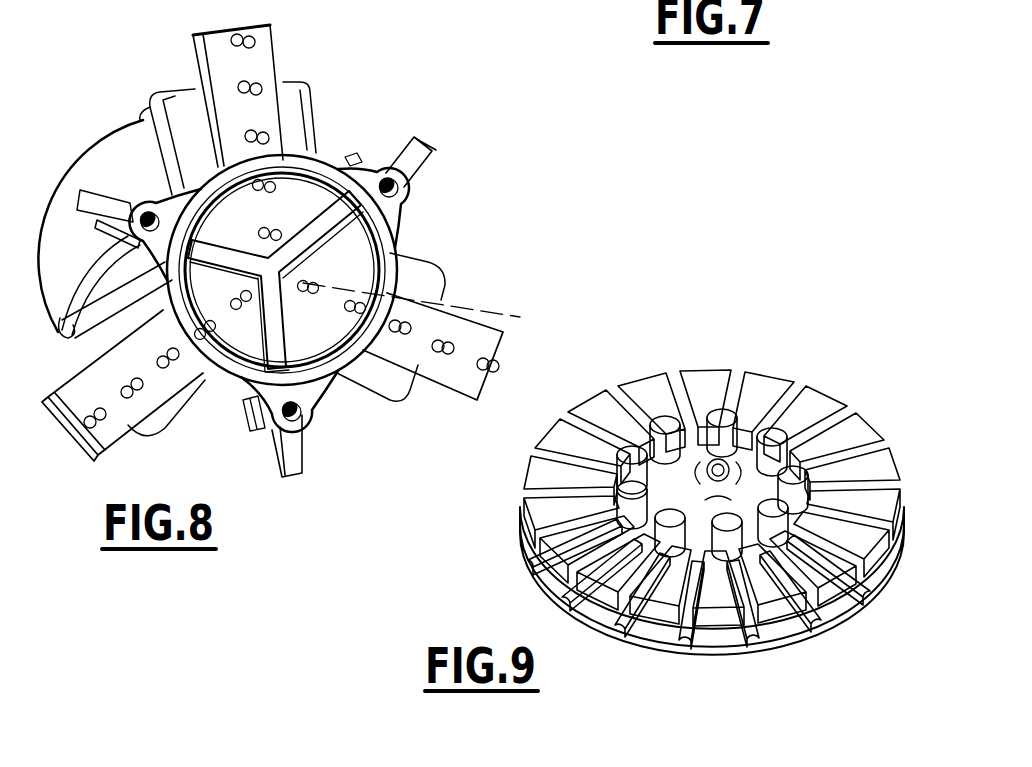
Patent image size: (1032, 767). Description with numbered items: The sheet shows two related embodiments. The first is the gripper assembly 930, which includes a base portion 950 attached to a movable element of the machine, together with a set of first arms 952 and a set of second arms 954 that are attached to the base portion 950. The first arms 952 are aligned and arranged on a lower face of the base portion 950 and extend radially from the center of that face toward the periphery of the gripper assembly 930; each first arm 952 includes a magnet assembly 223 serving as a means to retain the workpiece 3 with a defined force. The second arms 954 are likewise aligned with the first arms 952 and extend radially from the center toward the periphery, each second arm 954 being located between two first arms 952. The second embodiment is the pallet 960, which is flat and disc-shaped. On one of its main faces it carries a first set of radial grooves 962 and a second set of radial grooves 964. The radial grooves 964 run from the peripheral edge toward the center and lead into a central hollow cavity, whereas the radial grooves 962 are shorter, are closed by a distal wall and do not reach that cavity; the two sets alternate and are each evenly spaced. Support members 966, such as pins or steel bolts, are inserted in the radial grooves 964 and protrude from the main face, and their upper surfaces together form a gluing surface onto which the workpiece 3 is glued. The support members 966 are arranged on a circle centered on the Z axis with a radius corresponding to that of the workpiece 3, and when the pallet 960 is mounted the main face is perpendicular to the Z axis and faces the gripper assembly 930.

In FIG. 8, the gripper assembly 930 is at (450, 129).
In FIG. 8, the base portion 950 is at (88, 170).
In FIG. 8, the magnet assembly 223 is at (150, 213).
In FIG. 8, the second arm 954 is at (255, 62).
In FIG. 8, the first arm 952 is at (412, 158).
In FIG. 8, the workpiece 3 is at (307, 385).
In FIG. 8, the Z axis Z is at (422, 309).
In FIG. 9, the pallet 960 is at (793, 347).
In FIG. 9, the support member 966 is at (719, 412).
In FIG. 9, the first set of radial grooves 962 is at (822, 622).
In FIG. 9, the second set of radial grooves 964 is at (754, 633).